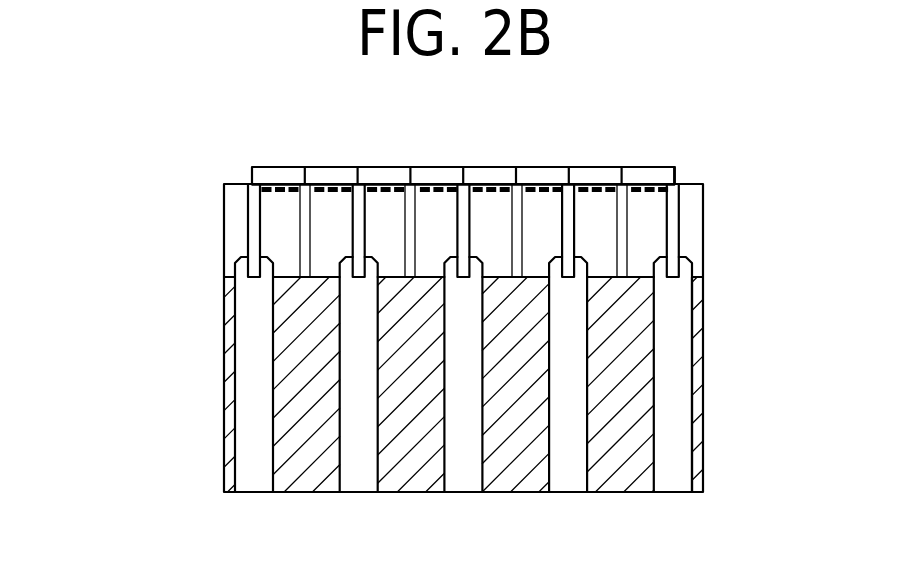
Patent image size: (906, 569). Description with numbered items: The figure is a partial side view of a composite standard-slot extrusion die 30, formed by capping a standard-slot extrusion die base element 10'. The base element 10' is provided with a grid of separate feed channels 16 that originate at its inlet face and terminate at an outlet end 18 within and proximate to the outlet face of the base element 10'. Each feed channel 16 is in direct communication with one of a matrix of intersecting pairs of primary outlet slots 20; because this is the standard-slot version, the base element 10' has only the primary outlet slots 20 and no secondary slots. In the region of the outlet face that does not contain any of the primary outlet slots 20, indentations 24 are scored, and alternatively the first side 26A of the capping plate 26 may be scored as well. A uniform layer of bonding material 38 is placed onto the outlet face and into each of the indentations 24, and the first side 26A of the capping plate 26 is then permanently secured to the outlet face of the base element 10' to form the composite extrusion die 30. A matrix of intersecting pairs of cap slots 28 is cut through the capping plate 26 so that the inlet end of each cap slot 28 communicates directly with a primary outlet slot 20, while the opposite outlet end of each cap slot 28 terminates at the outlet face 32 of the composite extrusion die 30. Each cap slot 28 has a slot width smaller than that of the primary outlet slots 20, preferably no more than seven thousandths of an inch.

The standard-slot extrusion die base element 10' is at (407, 338).
The feed channel 16 is at (600, 346).
The outlet end 18 is at (231, 251).
The primary outlet slot 20 is at (415, 233).
The indentation 24 is at (663, 180).
The capping plate 26 is at (241, 172).
The first side of the capping plate 26A is at (243, 190).
The cap slot 28 is at (519, 160).
The composite extrusion die 30 is at (98, 272).
The outlet face of the composite extrusion die 32 is at (651, 160).
The bonding material 38 is at (290, 186).